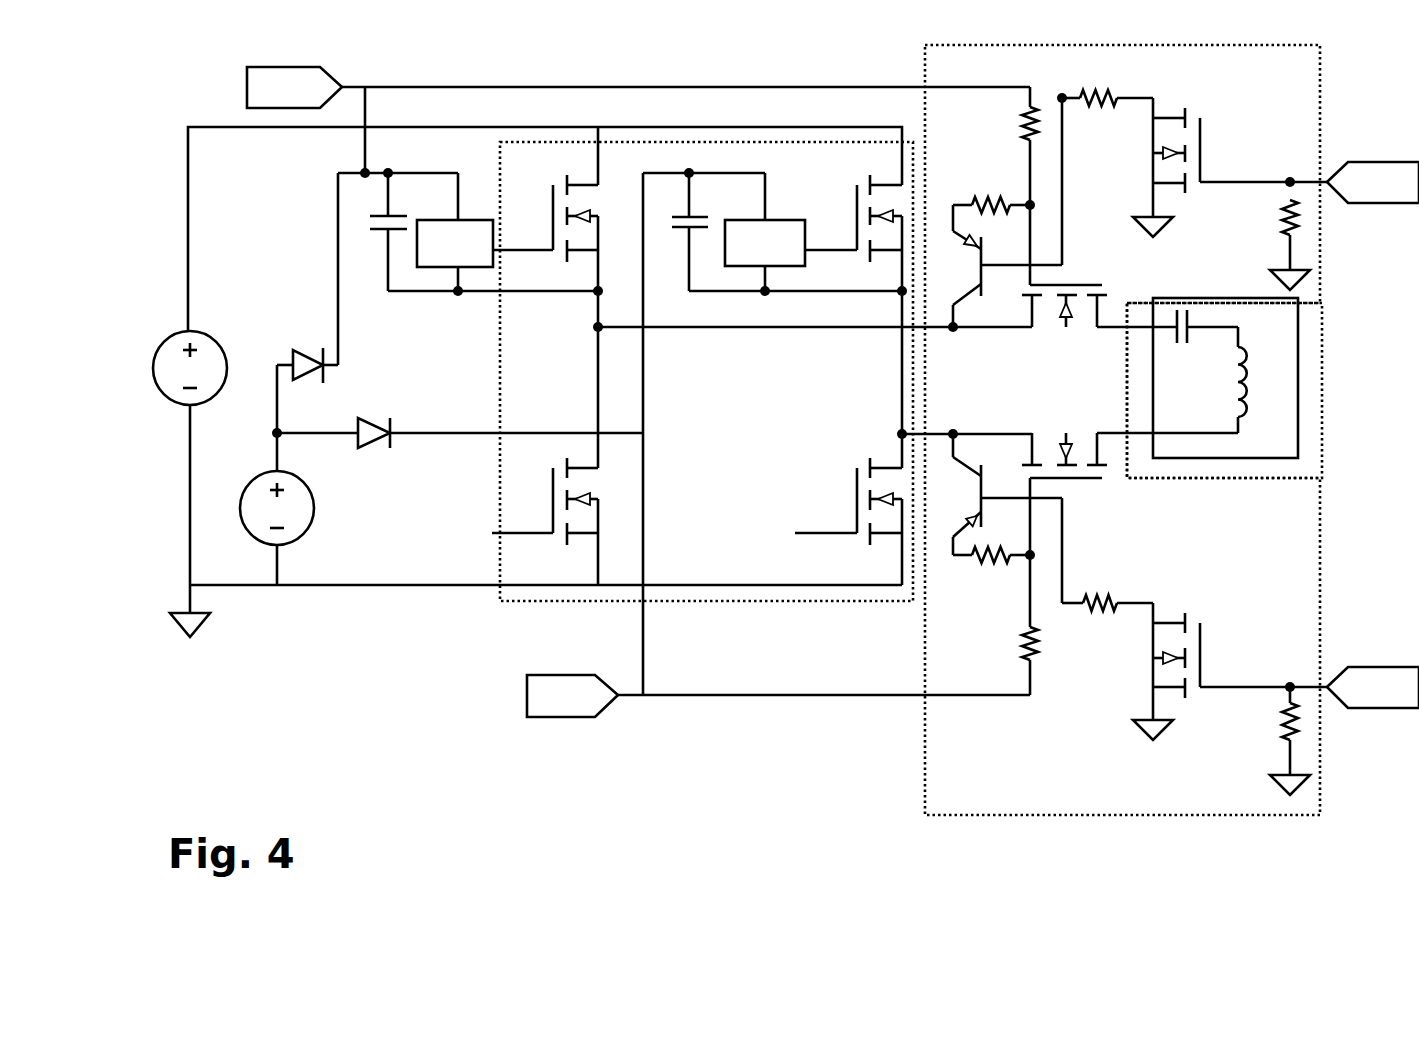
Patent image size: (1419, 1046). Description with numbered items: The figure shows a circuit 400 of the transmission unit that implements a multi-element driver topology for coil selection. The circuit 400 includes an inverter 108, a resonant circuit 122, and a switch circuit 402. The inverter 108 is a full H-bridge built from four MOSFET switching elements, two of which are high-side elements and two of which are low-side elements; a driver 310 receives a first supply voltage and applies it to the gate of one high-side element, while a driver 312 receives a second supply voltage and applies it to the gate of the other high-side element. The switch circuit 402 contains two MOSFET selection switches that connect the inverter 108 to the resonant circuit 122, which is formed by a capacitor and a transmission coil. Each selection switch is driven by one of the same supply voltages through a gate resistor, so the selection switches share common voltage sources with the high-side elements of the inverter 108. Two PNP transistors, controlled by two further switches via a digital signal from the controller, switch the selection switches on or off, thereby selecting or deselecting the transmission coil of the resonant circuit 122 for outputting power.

The circuit 400 is at (297, 767).
The inverter 108 is at (567, 605).
The driver 310 is at (437, 256).
The driver 312 is at (747, 256).
The switch circuit 402 is at (925, 735).
The resonant circuit 122 is at (1273, 430).